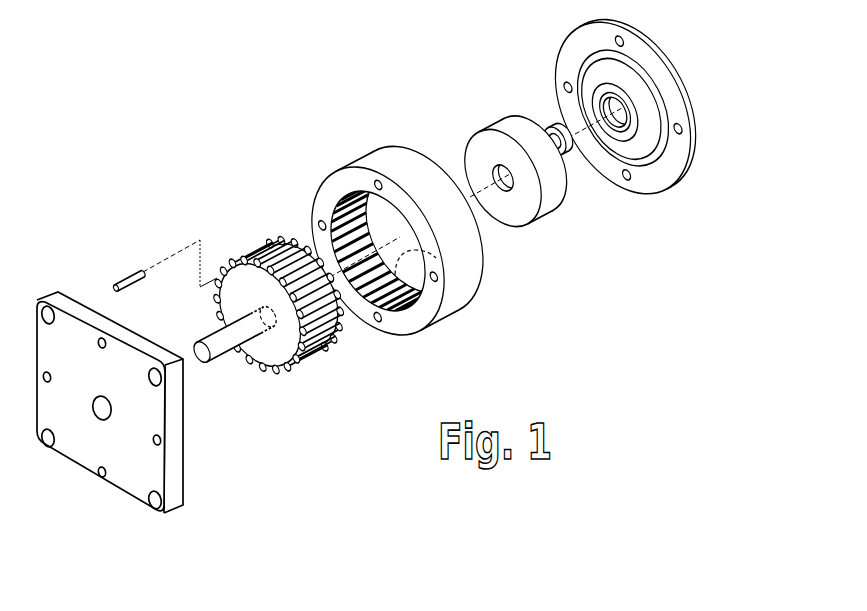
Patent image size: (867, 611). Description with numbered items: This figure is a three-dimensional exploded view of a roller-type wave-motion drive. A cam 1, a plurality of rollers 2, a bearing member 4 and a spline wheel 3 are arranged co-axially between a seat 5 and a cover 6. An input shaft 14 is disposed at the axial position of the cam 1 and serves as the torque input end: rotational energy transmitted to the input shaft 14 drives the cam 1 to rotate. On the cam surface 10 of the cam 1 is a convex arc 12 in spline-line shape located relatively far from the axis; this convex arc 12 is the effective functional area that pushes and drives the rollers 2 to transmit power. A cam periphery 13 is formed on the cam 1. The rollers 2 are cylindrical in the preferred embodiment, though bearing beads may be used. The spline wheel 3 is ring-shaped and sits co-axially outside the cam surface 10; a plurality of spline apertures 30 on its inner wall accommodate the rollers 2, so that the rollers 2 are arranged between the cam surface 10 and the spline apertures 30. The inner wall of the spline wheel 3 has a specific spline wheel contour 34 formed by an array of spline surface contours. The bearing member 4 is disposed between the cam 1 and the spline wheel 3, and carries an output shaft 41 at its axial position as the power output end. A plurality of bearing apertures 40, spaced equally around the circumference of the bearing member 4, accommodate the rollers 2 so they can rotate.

The cam 1 is at (504, 165).
The rollers 2 is at (127, 273).
The spline wheel 3 is at (367, 226).
The bearing member 4 is at (291, 328).
The seat 5 is at (137, 482).
The cover 6 is at (662, 180).
The cam surface 10 is at (492, 154).
The convex arc 12 is at (480, 140).
The cam periphery 13 is at (492, 154).
The input shaft 14 is at (567, 158).
The spline apertures 30 is at (436, 258).
The spline wheel contour 34 is at (333, 206).
The bearing apertures 40 is at (312, 360).
The output shaft 41 is at (218, 352).